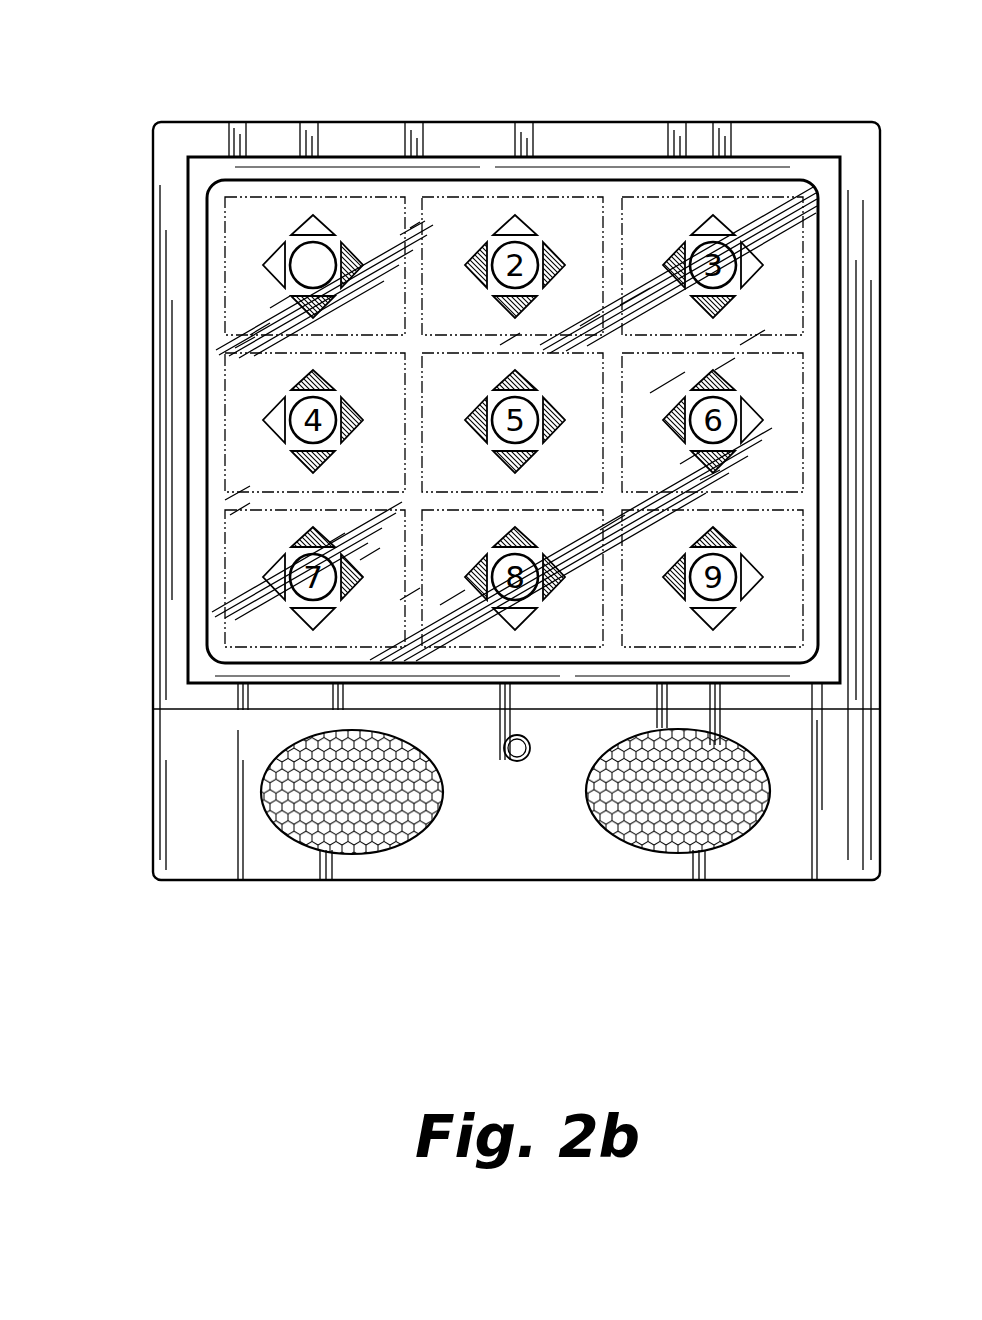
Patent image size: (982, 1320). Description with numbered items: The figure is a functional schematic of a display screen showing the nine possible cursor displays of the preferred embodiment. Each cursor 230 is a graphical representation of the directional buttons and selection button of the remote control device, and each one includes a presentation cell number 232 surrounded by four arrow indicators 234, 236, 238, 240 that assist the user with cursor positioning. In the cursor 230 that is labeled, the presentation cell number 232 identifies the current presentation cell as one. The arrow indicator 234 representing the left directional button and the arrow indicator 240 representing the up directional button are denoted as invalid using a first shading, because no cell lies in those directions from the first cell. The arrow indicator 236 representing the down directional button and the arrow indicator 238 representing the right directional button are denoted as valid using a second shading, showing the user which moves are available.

The cursor 230 is at (238, 198).
The presentation cell number 232 is at (291, 250).
The arrow indicator 234 is at (263, 264).
The arrow indicator 236 is at (290, 300).
The arrow indicator 238 is at (343, 243).
The arrow indicator 240 is at (297, 223).